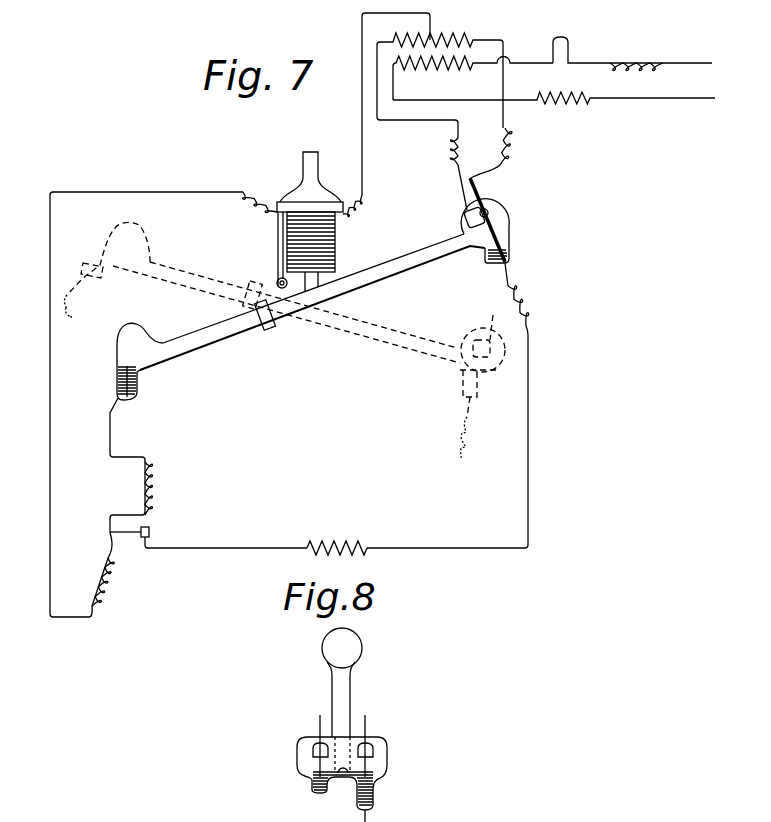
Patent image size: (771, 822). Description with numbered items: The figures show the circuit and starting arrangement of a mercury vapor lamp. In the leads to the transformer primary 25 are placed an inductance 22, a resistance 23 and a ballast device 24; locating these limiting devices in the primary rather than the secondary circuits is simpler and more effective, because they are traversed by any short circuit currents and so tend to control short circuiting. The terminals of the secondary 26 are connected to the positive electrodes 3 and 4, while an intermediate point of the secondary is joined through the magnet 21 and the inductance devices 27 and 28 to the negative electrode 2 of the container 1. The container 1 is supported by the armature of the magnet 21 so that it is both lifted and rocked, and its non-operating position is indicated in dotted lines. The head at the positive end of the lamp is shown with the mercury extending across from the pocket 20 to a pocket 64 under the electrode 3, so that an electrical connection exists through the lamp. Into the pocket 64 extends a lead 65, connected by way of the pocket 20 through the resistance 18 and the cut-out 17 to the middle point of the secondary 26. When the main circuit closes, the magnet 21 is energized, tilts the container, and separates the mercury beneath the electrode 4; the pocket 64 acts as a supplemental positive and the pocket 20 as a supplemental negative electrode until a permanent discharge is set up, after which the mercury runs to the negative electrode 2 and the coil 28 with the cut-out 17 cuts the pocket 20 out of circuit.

In FIG. 7, the container 1 is at (215, 337).
In FIG. 7, the negative electrode 2 is at (138, 378).
In FIG. 7, the positive electrode 3 is at (488, 212).
In FIG. 8, the positive electrode 3 is at (313, 748).
In FIG. 8, the positive electrode 4 is at (373, 748).
In FIG. 7, the cut-out 17 is at (149, 532).
In FIG. 7, the resistance 18 is at (337, 538).
In FIG. 8, the pocket 20 is at (374, 798).
In FIG. 7, the magnet 21 is at (335, 242).
In FIG. 7, the inductance 22 is at (640, 61).
In FIG. 7, the resistance 23 is at (554, 111).
In FIG. 7, the ballast device 24 is at (569, 44).
In FIG. 7, the primary 25 is at (473, 78).
In FIG. 7, the secondary 26 is at (453, 37).
In FIG. 7, the inductance device 27 is at (102, 590).
In FIG. 7, the inductance device 28 is at (151, 487).
In FIG. 8, the pocket 64 is at (323, 788).
In FIG. 8, the lead 65 is at (320, 765).